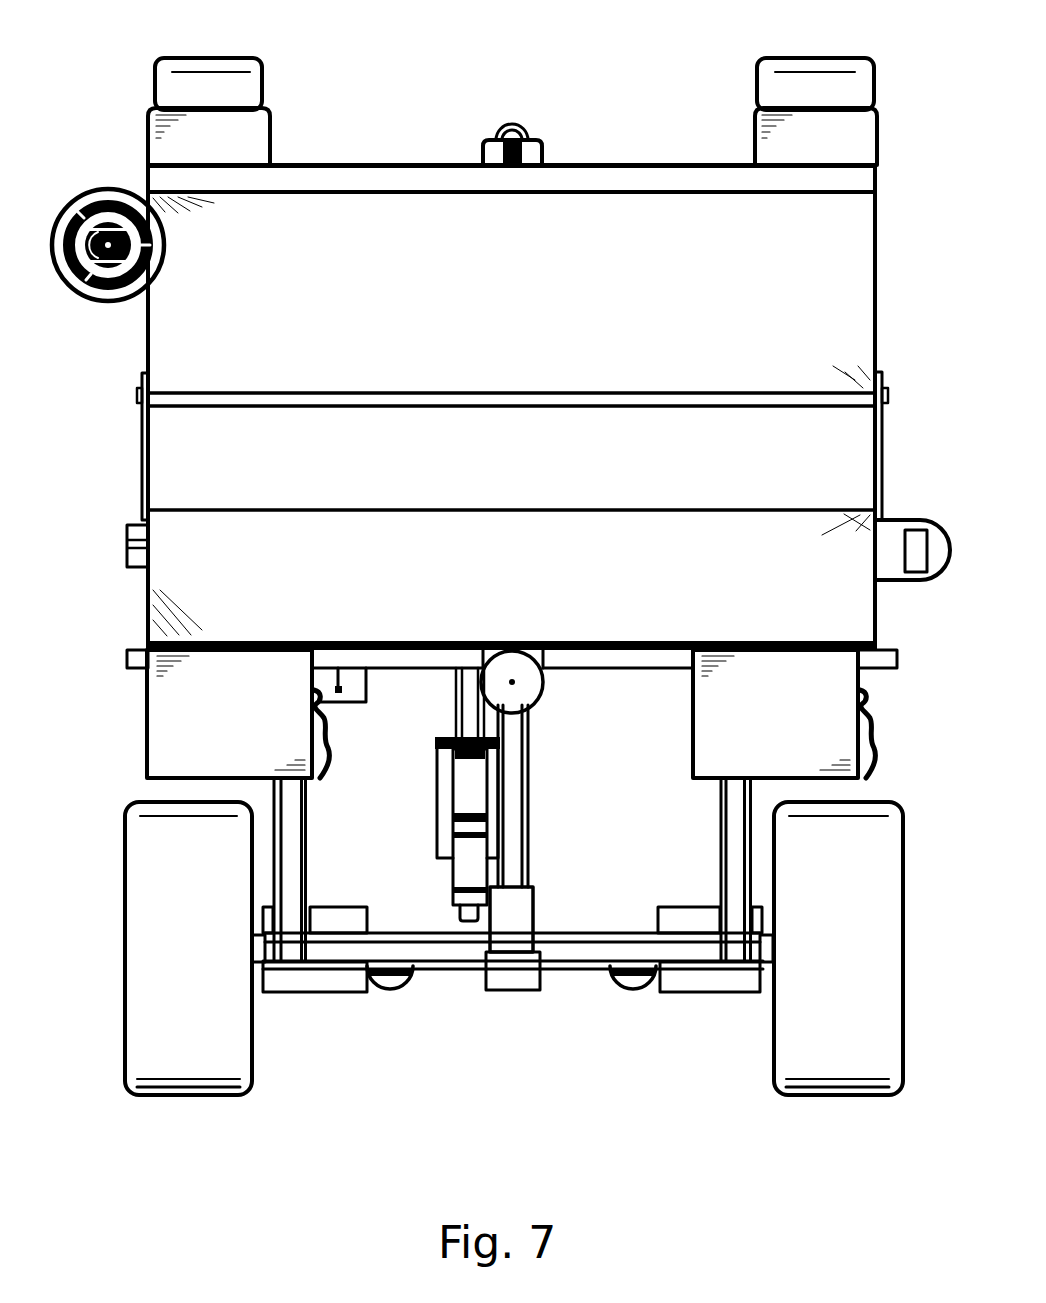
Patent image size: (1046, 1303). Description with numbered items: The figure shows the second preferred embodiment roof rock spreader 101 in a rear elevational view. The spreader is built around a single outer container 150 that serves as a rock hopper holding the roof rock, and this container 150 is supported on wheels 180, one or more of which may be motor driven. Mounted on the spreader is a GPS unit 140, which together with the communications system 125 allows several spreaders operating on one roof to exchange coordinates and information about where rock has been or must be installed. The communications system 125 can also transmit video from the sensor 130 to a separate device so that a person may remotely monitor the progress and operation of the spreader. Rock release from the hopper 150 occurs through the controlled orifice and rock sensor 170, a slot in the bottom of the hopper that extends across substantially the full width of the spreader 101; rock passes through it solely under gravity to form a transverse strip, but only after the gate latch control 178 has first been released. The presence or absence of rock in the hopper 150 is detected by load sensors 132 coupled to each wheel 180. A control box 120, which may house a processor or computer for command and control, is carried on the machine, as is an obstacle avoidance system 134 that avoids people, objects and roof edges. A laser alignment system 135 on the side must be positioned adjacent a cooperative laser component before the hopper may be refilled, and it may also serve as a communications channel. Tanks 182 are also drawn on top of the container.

The roof rock spreader 101 is at (117, 27).
The tanks 182 is at (775, 72).
The GPS unit 140 is at (100, 190).
The outer container 150 is at (147, 337).
The controlled orifice and rock sensor 170 is at (845, 483).
The laser alignment system 135 is at (917, 560).
The control box 120 is at (147, 742).
The communications system 125 is at (802, 727).
The gate latch control 178 is at (448, 677).
The obstacle avoidance system 134 is at (522, 914).
The sensor 130 is at (620, 983).
The load sensors 132 is at (700, 982).
The wheels 180 is at (787, 1063).